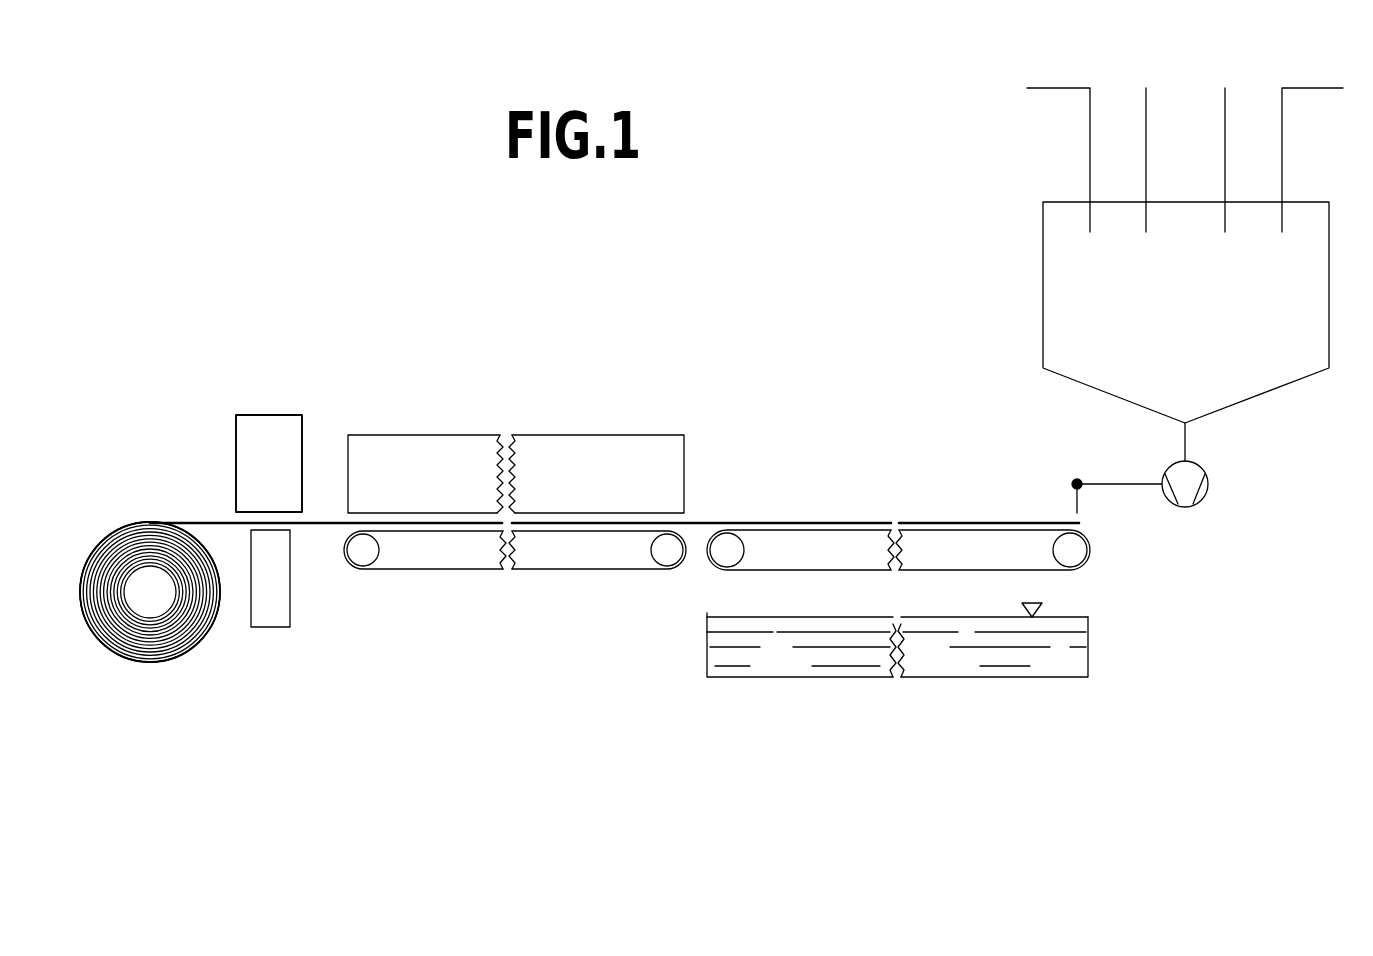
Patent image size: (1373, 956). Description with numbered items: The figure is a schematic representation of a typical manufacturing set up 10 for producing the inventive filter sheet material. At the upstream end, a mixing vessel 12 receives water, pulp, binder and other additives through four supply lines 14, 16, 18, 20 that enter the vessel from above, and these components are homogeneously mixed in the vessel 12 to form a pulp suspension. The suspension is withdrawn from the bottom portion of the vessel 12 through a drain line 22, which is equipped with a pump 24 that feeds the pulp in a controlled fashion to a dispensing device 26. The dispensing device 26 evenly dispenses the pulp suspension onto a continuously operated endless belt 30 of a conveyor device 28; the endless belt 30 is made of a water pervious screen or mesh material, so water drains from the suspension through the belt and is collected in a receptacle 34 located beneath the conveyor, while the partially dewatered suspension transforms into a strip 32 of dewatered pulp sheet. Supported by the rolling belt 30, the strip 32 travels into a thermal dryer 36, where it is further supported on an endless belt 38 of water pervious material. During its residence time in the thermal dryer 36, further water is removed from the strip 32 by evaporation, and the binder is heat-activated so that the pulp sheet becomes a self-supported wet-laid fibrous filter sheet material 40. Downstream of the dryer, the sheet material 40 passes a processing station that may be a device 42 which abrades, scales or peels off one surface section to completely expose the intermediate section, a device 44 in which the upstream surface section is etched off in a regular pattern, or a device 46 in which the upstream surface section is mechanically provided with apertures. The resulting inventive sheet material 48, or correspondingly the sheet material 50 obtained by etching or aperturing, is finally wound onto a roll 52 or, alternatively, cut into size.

The manufacturing set up 10 is at (757, 315).
The mixing vessel 12 is at (1203, 323).
The supply line 14 is at (1312, 86).
The supply line 16 is at (1225, 107).
The supply line 18 is at (1147, 107).
The supply line 20 is at (1046, 88).
The drain line 22 is at (1187, 442).
The pump 24 is at (1208, 487).
The dispensing device 26 is at (1078, 505).
The conveyor device 28 is at (923, 498).
The endless belt 30 is at (1078, 557).
The strip of dewatered pulp sheet 32 is at (768, 522).
The receptacle 34 is at (1088, 641).
The thermal dryer 36 is at (543, 420).
The endless belt 38 is at (478, 571).
The wet-laid fibrous filter sheet material 40 is at (320, 528).
The device 42 is at (256, 398).
The device 44 is at (269, 463).
The device 46 is at (269, 463).
The sheet material 48 is at (143, 527).
The sheet material 50 is at (150, 592).
The roll 52 is at (175, 678).